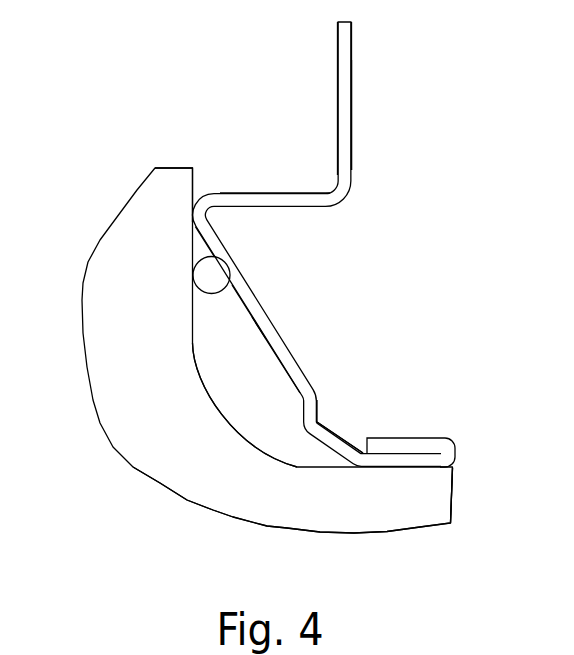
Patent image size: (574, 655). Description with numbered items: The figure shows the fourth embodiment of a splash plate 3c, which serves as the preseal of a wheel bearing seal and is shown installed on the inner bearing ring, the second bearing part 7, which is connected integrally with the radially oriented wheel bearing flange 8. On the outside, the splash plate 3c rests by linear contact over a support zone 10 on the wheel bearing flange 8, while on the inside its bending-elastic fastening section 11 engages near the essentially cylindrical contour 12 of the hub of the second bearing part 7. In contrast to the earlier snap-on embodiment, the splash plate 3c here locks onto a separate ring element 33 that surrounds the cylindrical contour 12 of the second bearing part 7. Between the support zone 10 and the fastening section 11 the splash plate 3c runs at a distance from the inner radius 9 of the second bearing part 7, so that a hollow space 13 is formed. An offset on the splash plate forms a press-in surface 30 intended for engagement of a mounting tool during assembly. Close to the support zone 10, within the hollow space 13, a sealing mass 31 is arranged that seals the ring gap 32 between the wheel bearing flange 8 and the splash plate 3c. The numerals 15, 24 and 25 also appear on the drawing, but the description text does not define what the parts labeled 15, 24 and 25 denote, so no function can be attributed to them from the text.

The splash plate 3c is at (367, 125).
The second bearing part 7 is at (355, 518).
The wheel bearing flange 8 is at (135, 212).
The inner radius 9 is at (199, 361).
The support zone 10 is at (192, 218).
The fastening section 11 is at (273, 352).
The cylindrical contour 12 is at (385, 470).
The hollow space 13 is at (242, 337).
The horizontal section 15 is at (298, 192).
The spring element 24 is at (216, 170).
The vertical leg 25 is at (353, 46).
The press-in surface 30 is at (317, 422).
The sealing mass 31 is at (227, 268).
The ring gap 32 is at (205, 245).
The ring element 33 is at (457, 454).